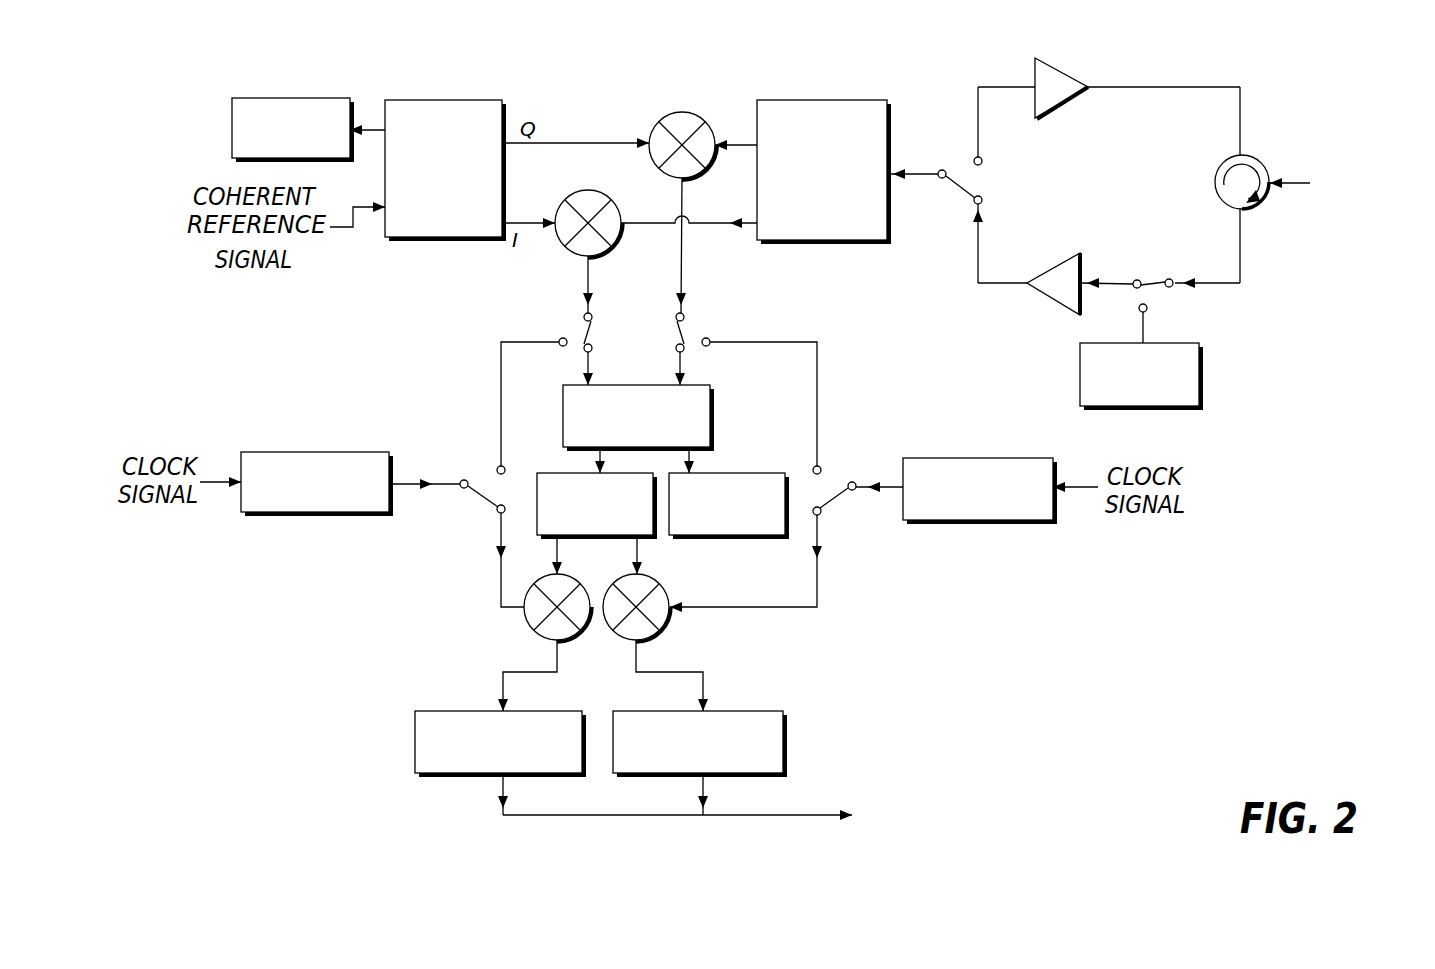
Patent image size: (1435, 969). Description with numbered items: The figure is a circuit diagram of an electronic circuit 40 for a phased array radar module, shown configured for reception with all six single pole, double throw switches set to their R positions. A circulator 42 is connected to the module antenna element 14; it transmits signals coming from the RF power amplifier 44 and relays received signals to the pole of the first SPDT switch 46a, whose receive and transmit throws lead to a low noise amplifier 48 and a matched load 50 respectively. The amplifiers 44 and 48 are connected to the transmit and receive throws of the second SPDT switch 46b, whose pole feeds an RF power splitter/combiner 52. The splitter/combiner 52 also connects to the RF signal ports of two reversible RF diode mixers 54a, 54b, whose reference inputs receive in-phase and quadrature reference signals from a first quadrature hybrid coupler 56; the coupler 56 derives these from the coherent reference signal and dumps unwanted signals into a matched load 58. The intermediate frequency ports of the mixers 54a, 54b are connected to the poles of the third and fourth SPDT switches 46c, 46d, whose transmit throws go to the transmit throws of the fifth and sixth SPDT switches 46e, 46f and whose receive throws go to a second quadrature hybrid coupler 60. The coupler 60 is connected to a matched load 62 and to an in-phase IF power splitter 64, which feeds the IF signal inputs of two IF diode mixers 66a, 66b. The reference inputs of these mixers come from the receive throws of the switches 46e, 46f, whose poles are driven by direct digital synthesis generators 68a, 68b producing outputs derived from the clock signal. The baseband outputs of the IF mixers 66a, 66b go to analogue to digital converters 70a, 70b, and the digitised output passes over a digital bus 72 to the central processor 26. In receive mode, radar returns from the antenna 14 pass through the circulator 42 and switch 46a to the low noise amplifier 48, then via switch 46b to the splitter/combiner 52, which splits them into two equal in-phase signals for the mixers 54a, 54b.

The module antenna element 14 is at (1344, 184).
The central processor 26 is at (944, 818).
The electronic circuit 40 is at (1140, 425).
The circulator 42 is at (1218, 170).
The RF power amplifier 44 is at (1055, 62).
The first SPDT switch 46a is at (1150, 280).
The second SPDT switch 46b is at (966, 178).
The third SPDT switch 46c is at (580, 333).
The fourth SPDT switch 46d is at (690, 330).
The fifth SPDT switch 46e is at (488, 482).
The sixth SPDT switch 46f is at (835, 495).
The low noise amplifier 48 is at (1055, 305).
The matched load 50 is at (1199, 385).
The RF power splitter/combiner 52 is at (826, 100).
The RF diode mixer 54a is at (568, 193).
The RF diode mixer 54b is at (676, 112).
The first quadrature hybrid coupler 56 is at (455, 100).
The matched load 58 is at (305, 98).
The second quadrature hybrid coupler 60 is at (712, 405).
The matched load 62 is at (740, 473).
The in-phase IF power splitter 64 is at (553, 473).
The IF diode mixer 66a is at (525, 627).
The IF diode mixer 66b is at (668, 618).
The DDS generator 68a is at (316, 512).
The DDS generator 68b is at (978, 520).
The analogue to digital converter 70a is at (462, 777).
The analogue to digital converter 70b is at (787, 738).
The digital bus 72 is at (600, 816).